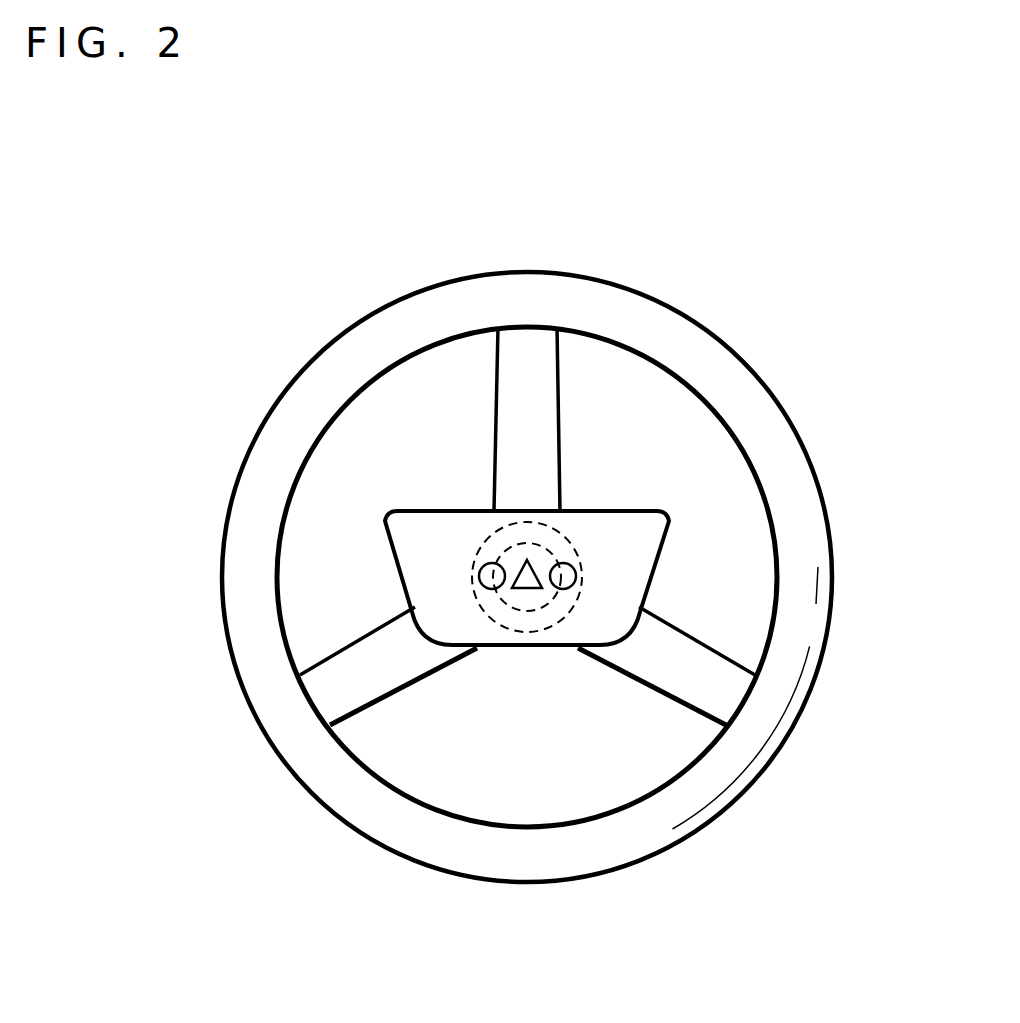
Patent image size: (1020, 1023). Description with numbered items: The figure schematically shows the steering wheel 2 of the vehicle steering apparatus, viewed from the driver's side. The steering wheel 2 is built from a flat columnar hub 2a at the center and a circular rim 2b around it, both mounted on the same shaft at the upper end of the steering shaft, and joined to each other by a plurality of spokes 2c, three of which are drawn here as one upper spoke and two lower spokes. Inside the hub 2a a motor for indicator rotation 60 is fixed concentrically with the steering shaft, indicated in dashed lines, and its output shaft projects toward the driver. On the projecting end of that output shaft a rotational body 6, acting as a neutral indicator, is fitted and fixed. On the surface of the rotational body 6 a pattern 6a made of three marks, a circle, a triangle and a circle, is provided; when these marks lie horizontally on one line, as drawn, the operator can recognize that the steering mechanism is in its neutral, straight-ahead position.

The steering wheel 2 is at (340, 332).
The hub 2a is at (483, 545).
The rim 2b is at (242, 498).
The spokes 2c is at (507, 391).
The rotational body 6 is at (647, 543).
The pattern 6a is at (587, 543).
The motor for indicator rotation 60 is at (527, 546).